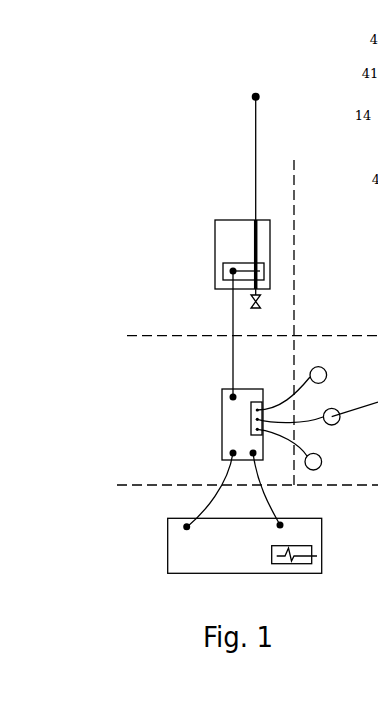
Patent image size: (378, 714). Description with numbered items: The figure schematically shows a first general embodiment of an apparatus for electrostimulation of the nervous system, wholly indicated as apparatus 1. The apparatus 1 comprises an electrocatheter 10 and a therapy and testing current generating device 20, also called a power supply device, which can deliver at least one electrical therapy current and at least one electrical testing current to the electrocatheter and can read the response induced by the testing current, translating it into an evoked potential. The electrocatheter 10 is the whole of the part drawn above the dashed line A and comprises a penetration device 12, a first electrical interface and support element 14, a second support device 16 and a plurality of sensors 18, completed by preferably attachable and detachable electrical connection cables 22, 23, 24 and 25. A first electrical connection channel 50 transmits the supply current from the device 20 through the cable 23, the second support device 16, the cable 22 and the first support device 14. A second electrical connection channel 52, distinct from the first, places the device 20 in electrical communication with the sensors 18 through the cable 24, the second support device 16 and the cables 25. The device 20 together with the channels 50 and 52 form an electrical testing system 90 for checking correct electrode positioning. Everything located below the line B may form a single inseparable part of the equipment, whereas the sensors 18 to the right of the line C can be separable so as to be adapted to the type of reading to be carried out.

The apparatus for electrostimulation of the nervous system 1 is at (123, 102).
The electrocatheter 10 is at (146, 209).
The penetration device 12 is at (251, 158).
The first electrical interface and support element 14 is at (213, 254).
The second support device 16 is at (219, 428).
The sensors 18 is at (318, 375).
The therapy and testing current generating device 20 is at (166, 545).
The electrical connection cable 22 is at (233, 358).
The electrical connection cable 23 is at (213, 507).
The electrical connection cable 24 is at (267, 507).
The electrical connection cables 25 is at (280, 402).
The first electrical connection channel 50 is at (227, 416).
The second electrical connection channel 52 is at (260, 500).
The electrical testing system 90 is at (107, 408).
The dashed line A is at (120, 479).
The line B is at (135, 332).
The line C is at (297, 261).